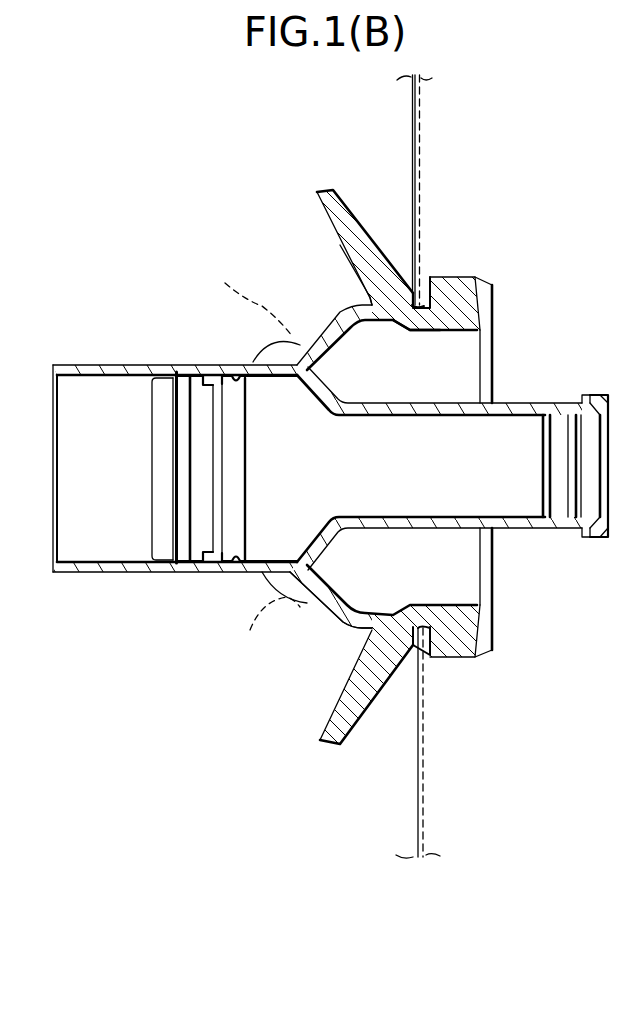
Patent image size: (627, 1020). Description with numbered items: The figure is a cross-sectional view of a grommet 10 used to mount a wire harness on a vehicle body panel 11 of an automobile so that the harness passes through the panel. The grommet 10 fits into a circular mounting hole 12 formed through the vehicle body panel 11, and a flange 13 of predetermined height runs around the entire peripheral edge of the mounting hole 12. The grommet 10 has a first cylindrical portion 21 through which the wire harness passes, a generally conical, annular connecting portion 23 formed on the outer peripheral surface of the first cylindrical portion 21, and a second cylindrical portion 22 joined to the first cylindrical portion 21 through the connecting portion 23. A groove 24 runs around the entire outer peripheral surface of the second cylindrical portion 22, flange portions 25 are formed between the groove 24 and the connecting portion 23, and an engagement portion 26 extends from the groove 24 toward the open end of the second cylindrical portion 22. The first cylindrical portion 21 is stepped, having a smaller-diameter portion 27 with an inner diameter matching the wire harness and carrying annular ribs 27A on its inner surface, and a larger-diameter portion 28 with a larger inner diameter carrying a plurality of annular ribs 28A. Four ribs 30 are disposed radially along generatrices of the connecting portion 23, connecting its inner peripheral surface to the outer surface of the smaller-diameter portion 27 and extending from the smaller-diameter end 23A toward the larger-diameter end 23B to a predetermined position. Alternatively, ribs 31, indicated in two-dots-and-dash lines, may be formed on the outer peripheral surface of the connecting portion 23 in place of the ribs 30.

The grommet 10 is at (556, 220).
The vehicle body panel 11 is at (420, 122).
The mounting hole 12 is at (403, 328).
The flange 13 is at (428, 276).
The first cylindrical portion 21 is at (188, 573).
The second cylindrical portion 22 is at (380, 653).
The connecting portion 23 is at (285, 337).
The smaller-diameter end 23A is at (262, 343).
The larger-diameter end 23B is at (373, 303).
The groove 24 is at (428, 656).
The flange portions 25 is at (333, 188).
The engagement portion 26 is at (478, 272).
The smaller-diameter portion 27 is at (528, 530).
The annular ribs 27A is at (554, 417).
The larger-diameter portion 28 is at (118, 573).
The annular ribs 28A is at (230, 466).
The ribs 30 is at (362, 372).
The ribs 31 is at (255, 456).